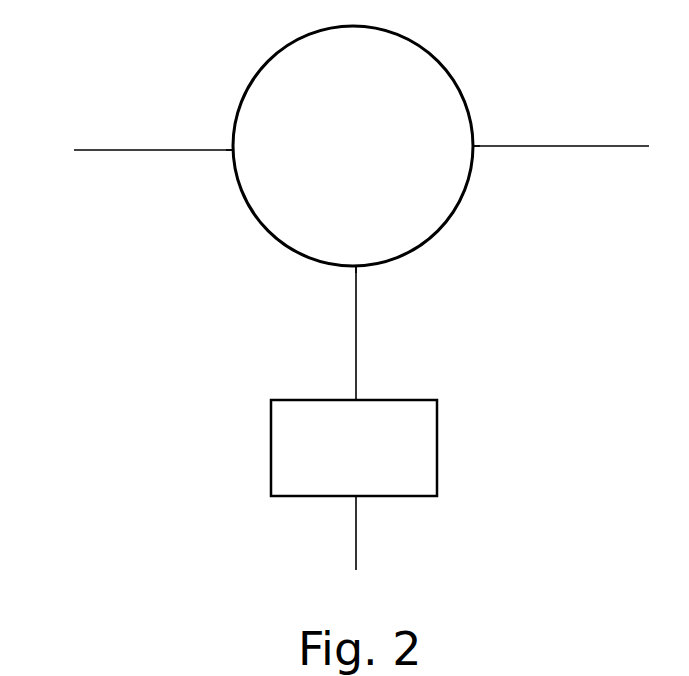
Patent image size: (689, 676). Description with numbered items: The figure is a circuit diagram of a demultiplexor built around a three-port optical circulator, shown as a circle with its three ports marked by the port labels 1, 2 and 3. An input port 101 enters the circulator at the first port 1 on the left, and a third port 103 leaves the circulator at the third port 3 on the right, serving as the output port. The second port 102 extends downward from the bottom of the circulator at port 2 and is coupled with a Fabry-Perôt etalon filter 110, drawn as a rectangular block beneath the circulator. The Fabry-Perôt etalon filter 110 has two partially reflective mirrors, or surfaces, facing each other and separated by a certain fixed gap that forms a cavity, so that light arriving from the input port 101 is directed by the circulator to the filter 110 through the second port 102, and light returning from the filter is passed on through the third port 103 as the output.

The input port 101 is at (227, 138).
The second port 102 is at (347, 277).
The third port 103 is at (480, 140).
The Fabry-Perôt etalon filter 110 is at (422, 398).
The circulator port 1 is at (225, 172).
The circulator port 2 is at (369, 286).
The circulator port 3 is at (485, 168).